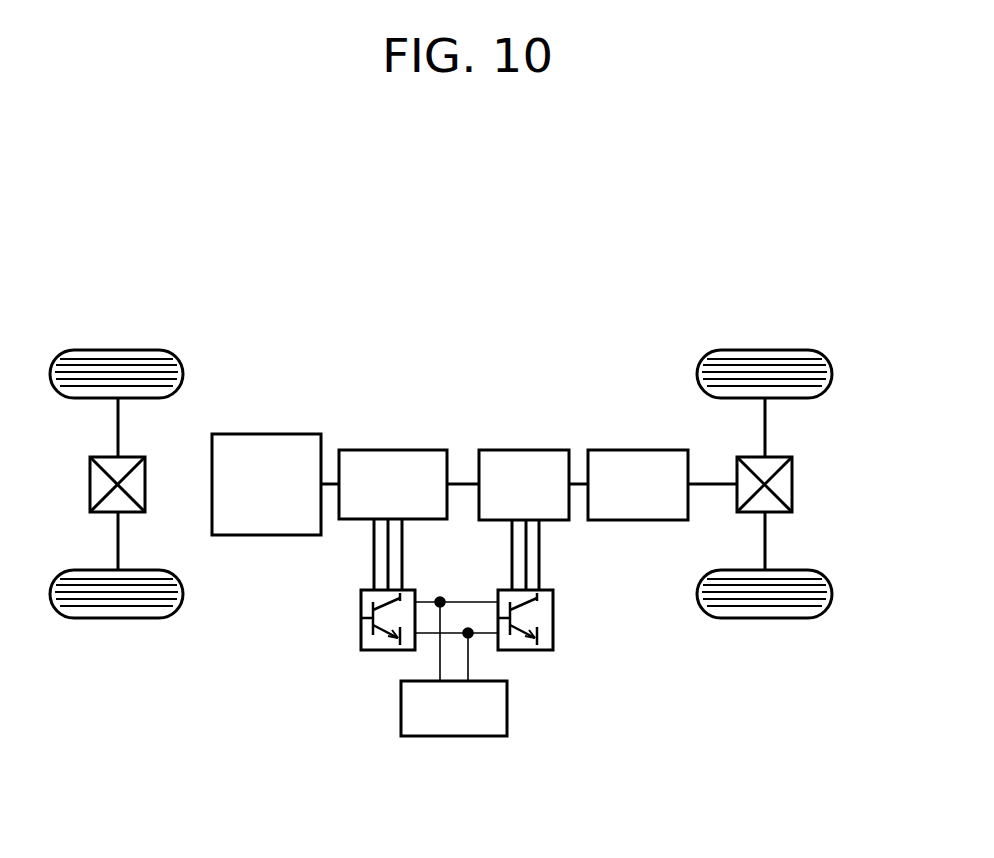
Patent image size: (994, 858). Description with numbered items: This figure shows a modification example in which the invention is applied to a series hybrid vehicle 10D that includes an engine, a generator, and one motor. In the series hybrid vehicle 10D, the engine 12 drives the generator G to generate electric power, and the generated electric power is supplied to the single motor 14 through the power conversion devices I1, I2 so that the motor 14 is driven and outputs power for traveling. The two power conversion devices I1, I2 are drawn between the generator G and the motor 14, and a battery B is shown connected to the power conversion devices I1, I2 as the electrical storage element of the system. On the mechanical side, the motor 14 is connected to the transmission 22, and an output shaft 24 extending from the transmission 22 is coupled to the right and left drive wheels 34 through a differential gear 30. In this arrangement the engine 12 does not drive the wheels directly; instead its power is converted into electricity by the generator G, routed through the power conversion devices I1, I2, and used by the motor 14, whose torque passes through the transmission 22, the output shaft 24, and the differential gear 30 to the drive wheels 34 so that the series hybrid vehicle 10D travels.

The series hybrid vehicle 10D is at (552, 300).
The engine 12 is at (276, 433).
The generator G is at (400, 450).
The motor 14 is at (528, 450).
The transmission 22 is at (632, 450).
The output shaft 24 is at (705, 478).
The differential gear 30 is at (792, 482).
The drive wheels 34 is at (766, 350).
The power conversion device I1 is at (380, 650).
The power conversion device I2 is at (535, 650).
The battery B is at (455, 737).